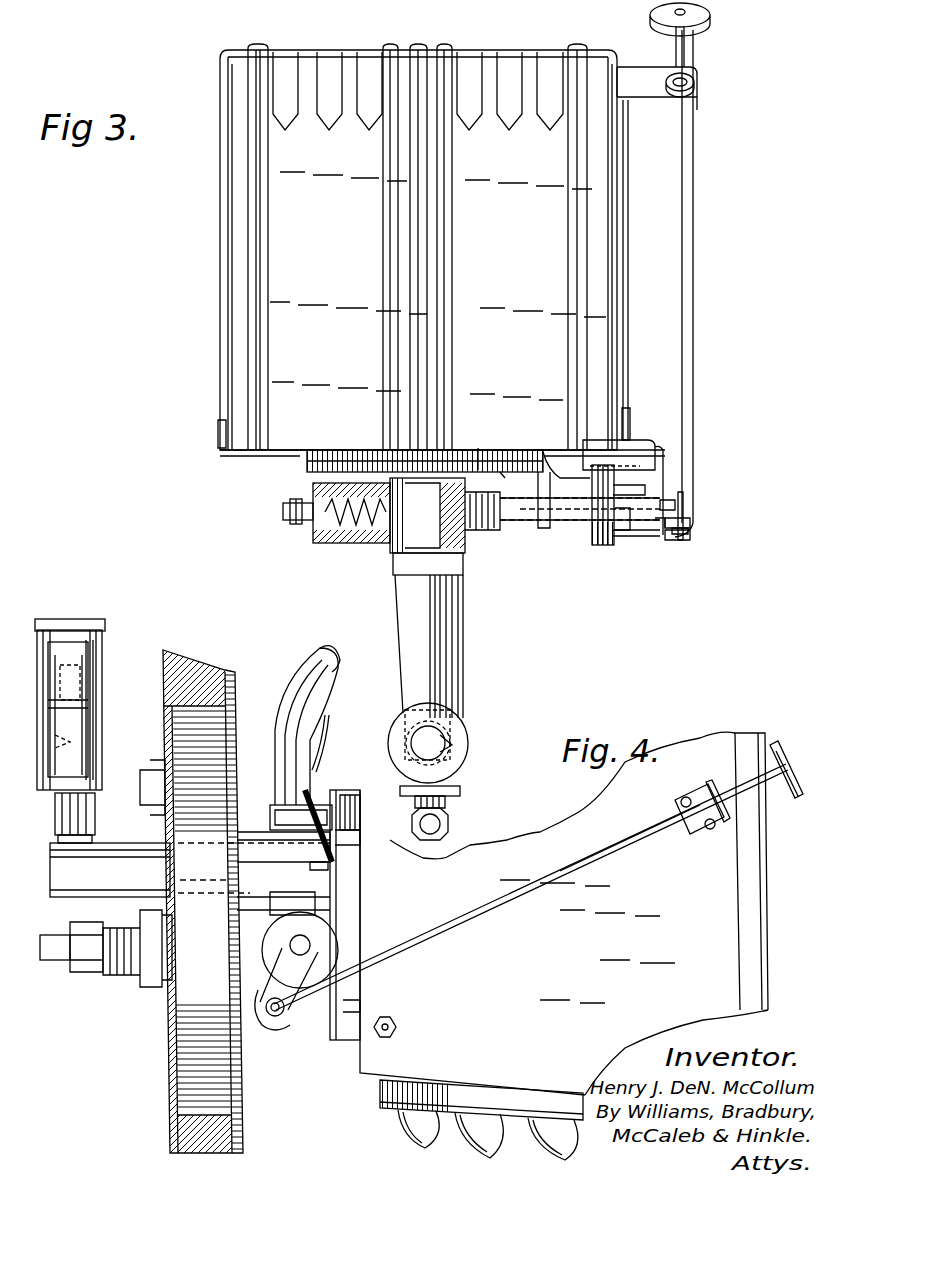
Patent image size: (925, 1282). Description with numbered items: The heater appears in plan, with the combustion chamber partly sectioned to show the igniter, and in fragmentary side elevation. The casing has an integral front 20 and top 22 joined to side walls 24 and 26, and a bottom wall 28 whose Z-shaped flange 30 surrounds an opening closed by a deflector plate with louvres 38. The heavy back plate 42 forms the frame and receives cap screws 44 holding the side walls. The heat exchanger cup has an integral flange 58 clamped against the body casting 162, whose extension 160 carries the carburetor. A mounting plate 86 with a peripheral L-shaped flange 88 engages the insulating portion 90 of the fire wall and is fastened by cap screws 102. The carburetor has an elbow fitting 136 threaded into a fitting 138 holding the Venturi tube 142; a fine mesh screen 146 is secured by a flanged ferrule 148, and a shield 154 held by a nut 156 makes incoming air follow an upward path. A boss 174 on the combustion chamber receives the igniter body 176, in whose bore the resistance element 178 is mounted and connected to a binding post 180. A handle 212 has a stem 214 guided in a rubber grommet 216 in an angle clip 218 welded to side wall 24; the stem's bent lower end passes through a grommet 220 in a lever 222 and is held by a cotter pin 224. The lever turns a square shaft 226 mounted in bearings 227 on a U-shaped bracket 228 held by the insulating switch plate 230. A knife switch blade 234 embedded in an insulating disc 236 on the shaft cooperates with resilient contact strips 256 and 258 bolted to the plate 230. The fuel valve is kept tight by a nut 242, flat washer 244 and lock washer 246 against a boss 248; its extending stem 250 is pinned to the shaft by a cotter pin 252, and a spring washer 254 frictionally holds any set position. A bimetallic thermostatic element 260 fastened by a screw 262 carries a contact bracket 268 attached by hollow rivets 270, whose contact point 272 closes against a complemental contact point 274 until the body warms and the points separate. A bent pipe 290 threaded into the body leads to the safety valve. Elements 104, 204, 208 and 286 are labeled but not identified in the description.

In FIG. 3, the front 20 is at (372, 46).
In FIG. 4, the front 20 is at (770, 880).
In FIG. 3, the top 22 is at (290, 270).
In FIG. 3, the side wall 24 is at (622, 216).
In FIG. 4, the side wall 24 is at (735, 934).
In FIG. 3, the side wall 26 is at (225, 318).
In FIG. 4, the bottom wall 28 is at (372, 1083).
In FIG. 4, the Z-shaped flange 30 is at (450, 1084).
In FIG. 4, the louvres 38 is at (500, 1088).
In FIG. 3, the back plate 42 is at (278, 455).
In FIG. 4, the back plate 42 is at (358, 1058).
In FIG. 3, the cap screws 44 is at (220, 430).
In FIG. 4, the cap screws 44 is at (395, 1027).
In FIG. 3, the flange 58 is at (340, 452).
In FIG. 4, the flange 58 is at (366, 792).
In FIG. 4, the mounting plate 86 is at (245, 706).
In FIG. 4, the peripheral L-shaped flange 88 is at (262, 730).
In FIG. 4, the sound and heat insulating portion 90 is at (225, 662).
In FIG. 4, the cap screws 102 is at (152, 705).
In FIG. 4, the coupling 104 is at (168, 787).
In FIG. 3, the fuel receiving elbow fitting 136 is at (445, 825).
In FIG. 3, the fitting 138 is at (455, 745).
In FIG. 4, the fitting 138 is at (95, 672).
In FIG. 4, the Venturi tube 142 is at (100, 740).
In FIG. 3, the fine mesh screen 146 is at (440, 740).
In FIG. 4, the fine mesh screen 146 is at (78, 620).
In FIG. 3, the flanged ferrule 148 is at (434, 728).
In FIG. 4, the flanged ferrule 148 is at (88, 650).
In FIG. 3, the shield 154 is at (440, 700).
In FIG. 4, the shield 154 is at (100, 632).
In FIG. 3, the nut 156 is at (455, 790).
In FIG. 4, the nut 156 is at (95, 810).
In FIG. 3, the extension 160 is at (432, 632).
In FIG. 4, the extension 160 is at (118, 848).
In FIG. 3, the body 162 is at (395, 566).
In FIG. 4, the body 162 is at (250, 853).
In FIG. 3, the boss 174 is at (378, 548).
In FIG. 3, the igniter body 176 is at (328, 545).
In FIG. 3, the resistance element 178 is at (318, 533).
In FIG. 3, the binding post 180 is at (292, 502).
In FIG. 4, the threaded fitting 204 is at (130, 970).
In FIG. 4, the nut 208 is at (60, 958).
In FIG. 3, the handle 212 is at (712, 26).
In FIG. 4, the handle 212 is at (790, 745).
In FIG. 3, the stem 214 is at (694, 176).
In FIG. 4, the stem 214 is at (598, 855).
In FIG. 3, the rubber grommet 216 is at (696, 88).
In FIG. 4, the rubber grommet 216 is at (706, 785).
In FIG. 3, the angle clip 218 is at (655, 95).
In FIG. 4, the angle clip 218 is at (685, 796).
In FIG. 3, the grommet 220 is at (692, 535).
In FIG. 4, the grommet 220 is at (368, 1005).
In FIG. 3, the lever 222 is at (685, 505).
In FIG. 4, the lever 222 is at (258, 1005).
In FIG. 3, the cotter pin 224 is at (672, 532).
In FIG. 3, the square shaft 226 is at (665, 505).
In FIG. 3, the bearings 227 is at (660, 525).
In FIG. 3, the U-shaped bracket 228 is at (657, 448).
In FIG. 4, the U-shaped bracket 228 is at (350, 925).
In FIG. 3, the insulating switch plate 230 is at (640, 450).
In FIG. 4, the insulating switch plate 230 is at (358, 880).
In FIG. 3, the knife switch blade 234 is at (598, 550).
In FIG. 4, the knife switch blade 234 is at (300, 896).
In FIG. 3, the disc 236 is at (603, 545).
In FIG. 4, the disc 236 is at (372, 960).
In FIG. 3, the nut 242 is at (470, 535).
In FIG. 3, the flat washer 244 is at (478, 503).
In FIG. 3, the lock washer 246 is at (480, 516).
In FIG. 3, the boss 248 is at (470, 494).
In FIG. 3, the extending stem 250 is at (518, 508).
In FIG. 3, the cotter pin 252 is at (520, 452).
In FIG. 3, the spring washer 254 is at (548, 470).
In FIG. 3, the resilient contact strip 256 is at (618, 518).
In FIG. 4, the resilient contact strip 256 is at (240, 880).
In FIG. 3, the resilient contact strip 258 is at (596, 522).
In FIG. 3, the bimetallic thermostatic element 260 is at (510, 450).
In FIG. 3, the screw 262 is at (481, 448).
In FIG. 4, the contact bracket 268 is at (282, 792).
In FIG. 4, the hollow rivets 270 is at (340, 788).
In FIG. 4, the contact point 272 is at (325, 865).
In FIG. 4, the complemental contact point 274 is at (350, 848).
In FIG. 4, the cable 286 is at (325, 722).
In FIG. 4, the bent pipe 290 is at (333, 663).